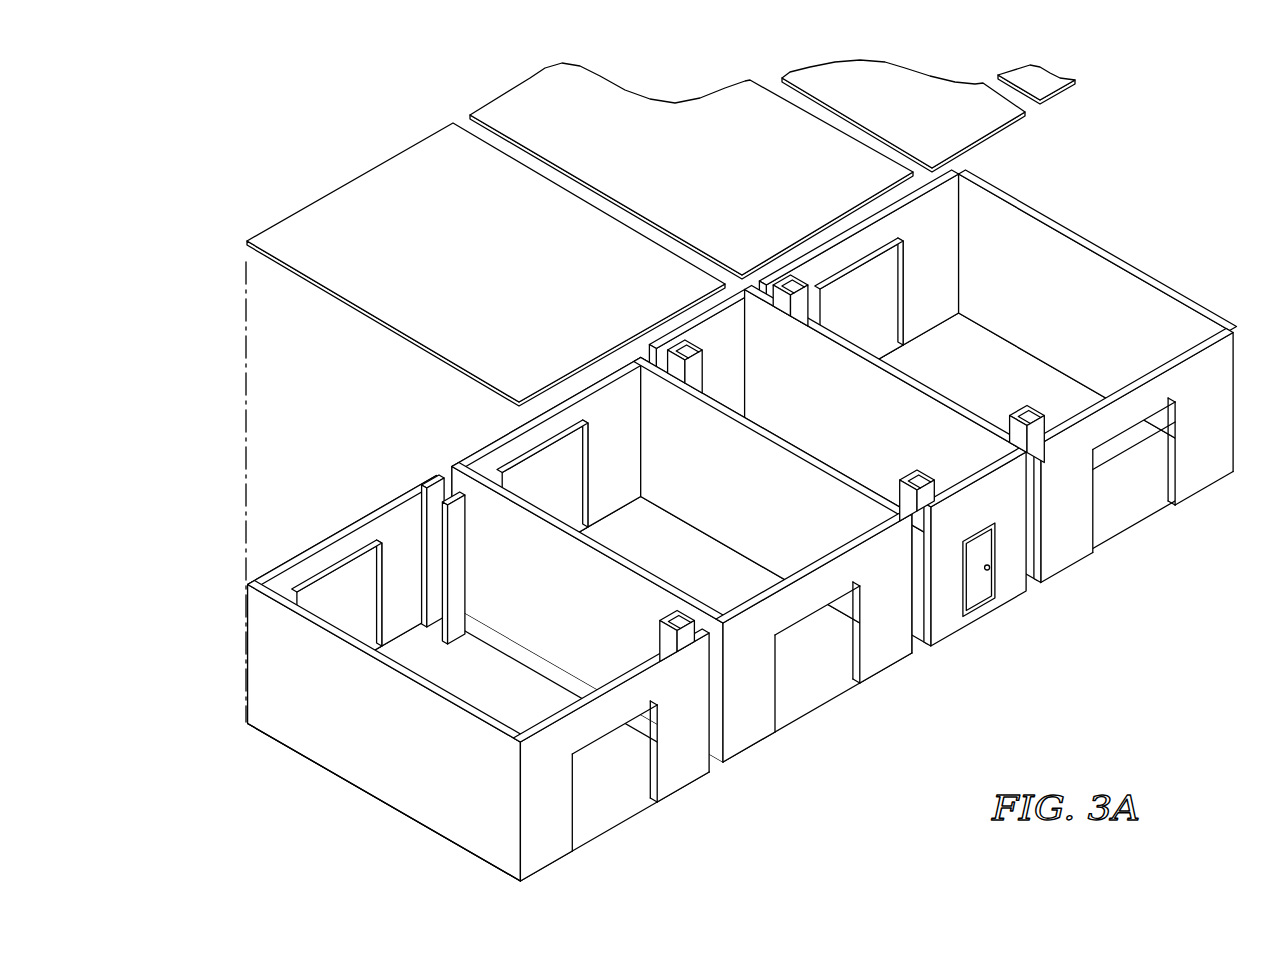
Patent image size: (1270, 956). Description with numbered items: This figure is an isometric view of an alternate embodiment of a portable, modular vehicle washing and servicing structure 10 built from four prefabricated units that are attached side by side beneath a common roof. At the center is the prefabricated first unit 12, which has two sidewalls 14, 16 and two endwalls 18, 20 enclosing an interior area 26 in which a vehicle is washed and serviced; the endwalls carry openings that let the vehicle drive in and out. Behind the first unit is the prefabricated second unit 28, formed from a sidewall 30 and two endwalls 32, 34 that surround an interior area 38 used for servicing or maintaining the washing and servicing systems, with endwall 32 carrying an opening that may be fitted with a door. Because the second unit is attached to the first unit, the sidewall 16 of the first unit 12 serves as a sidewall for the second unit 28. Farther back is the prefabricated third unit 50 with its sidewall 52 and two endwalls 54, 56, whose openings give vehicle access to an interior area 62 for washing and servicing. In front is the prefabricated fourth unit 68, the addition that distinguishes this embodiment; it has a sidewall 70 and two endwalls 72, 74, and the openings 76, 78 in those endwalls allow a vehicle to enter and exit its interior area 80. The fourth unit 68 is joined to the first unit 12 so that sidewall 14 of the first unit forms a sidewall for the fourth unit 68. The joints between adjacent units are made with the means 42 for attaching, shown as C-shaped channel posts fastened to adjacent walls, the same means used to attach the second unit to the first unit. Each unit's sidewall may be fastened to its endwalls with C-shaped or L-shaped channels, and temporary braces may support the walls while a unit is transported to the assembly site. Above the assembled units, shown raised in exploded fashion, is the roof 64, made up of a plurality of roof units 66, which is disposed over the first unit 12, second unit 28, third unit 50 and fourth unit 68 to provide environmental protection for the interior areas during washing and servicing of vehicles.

The vehicle washing and servicing structure 10 is at (754, 525).
The first unit 12 is at (672, 574).
The sidewall 14 is at (493, 628).
The sidewall 16 is at (660, 512).
The endwall 18 is at (760, 745).
The endwall 20 is at (465, 453).
The interior area 26 is at (700, 588).
The second unit 28 is at (855, 477).
The sidewall 30 is at (913, 385).
The endwall 32 is at (1010, 600).
The endwall 34 is at (690, 322).
The interior area 38 is at (823, 414).
The means for attaching 42 is at (707, 373).
The third unit 50 is at (1009, 376).
The sidewall 52 is at (1083, 242).
The endwall 54 is at (1210, 487).
The endwall 56 is at (850, 233).
The interior area 62 is at (1016, 391).
The roof 64 is at (680, 233).
The roof units 66 is at (355, 183).
The fourth unit 68 is at (493, 679).
The sidewall 70 is at (337, 775).
The endwall 72 is at (560, 858).
The endwall 74 is at (342, 525).
The opening 76 is at (601, 793).
The opening 78 is at (336, 613).
The interior area 80 is at (503, 706).